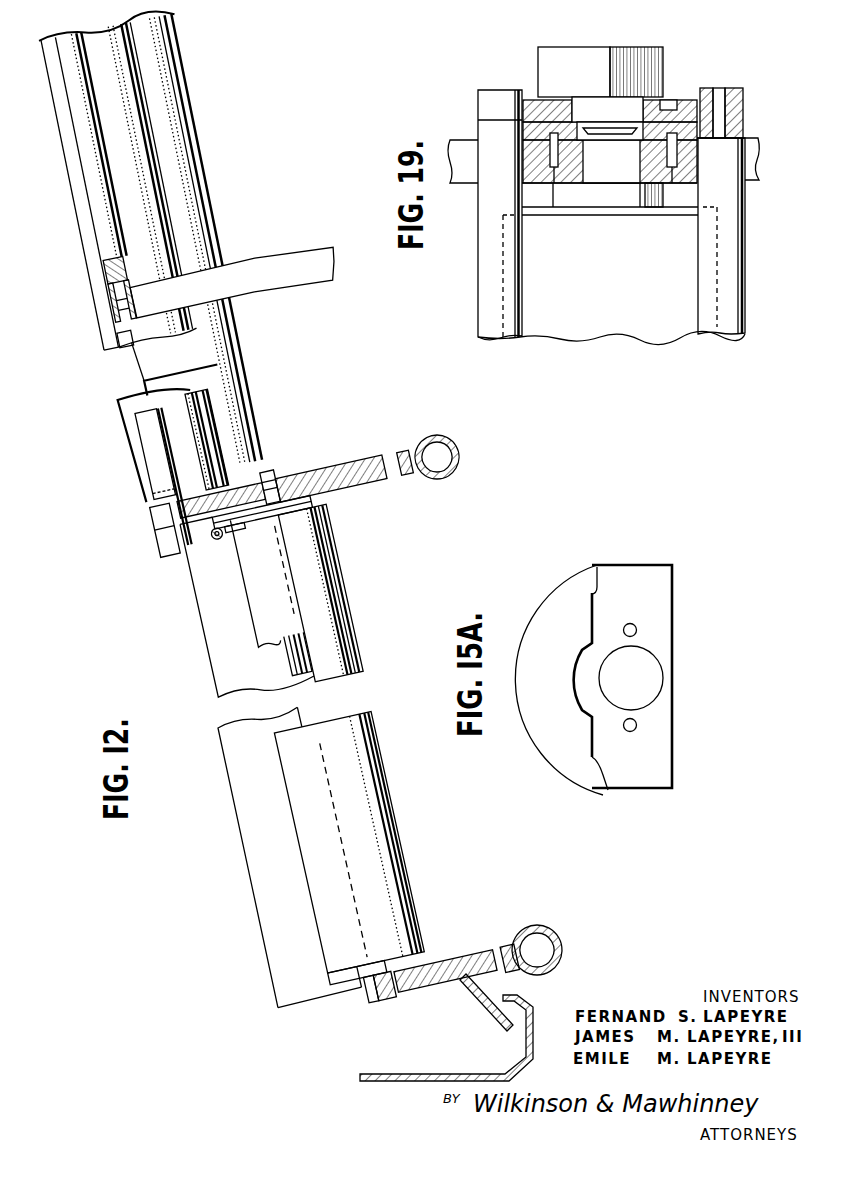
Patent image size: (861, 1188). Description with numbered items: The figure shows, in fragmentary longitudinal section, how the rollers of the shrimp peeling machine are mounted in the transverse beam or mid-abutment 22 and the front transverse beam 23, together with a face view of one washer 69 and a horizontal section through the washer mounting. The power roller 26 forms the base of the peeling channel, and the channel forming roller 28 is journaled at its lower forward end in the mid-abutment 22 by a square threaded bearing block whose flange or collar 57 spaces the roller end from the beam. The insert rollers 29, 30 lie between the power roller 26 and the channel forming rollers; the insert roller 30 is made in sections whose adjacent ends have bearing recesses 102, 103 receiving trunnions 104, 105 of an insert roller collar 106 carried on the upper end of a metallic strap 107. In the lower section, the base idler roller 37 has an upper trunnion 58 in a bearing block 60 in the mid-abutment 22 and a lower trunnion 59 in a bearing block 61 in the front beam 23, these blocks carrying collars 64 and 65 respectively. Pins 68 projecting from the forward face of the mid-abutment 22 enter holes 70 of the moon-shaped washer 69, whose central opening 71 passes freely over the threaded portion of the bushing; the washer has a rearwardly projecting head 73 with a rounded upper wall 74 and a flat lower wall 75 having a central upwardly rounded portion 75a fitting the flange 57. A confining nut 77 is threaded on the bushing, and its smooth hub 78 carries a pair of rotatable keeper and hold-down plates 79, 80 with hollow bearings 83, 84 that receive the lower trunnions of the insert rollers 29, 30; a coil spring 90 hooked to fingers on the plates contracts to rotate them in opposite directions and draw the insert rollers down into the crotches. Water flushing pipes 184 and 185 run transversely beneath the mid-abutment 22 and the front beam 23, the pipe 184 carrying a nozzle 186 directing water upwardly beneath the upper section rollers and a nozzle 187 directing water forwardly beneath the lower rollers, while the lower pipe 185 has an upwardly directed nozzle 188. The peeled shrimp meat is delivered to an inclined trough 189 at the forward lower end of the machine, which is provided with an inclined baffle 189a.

In FIG. 19, the transverse beam or mid-abutment 22 is at (448, 162).
In FIG. 12, the transverse beam or mid-abutment 22 is at (360, 462).
In FIG. 12, the transverse beam 23 is at (480, 958).
In FIG. 12, the power roller 26 is at (187, 177).
In FIG. 19, the channel forming roller 28 is at (568, 341).
In FIG. 12, the channel forming roller 28 is at (115, 100).
In FIG. 19, the insert roller 29 is at (730, 238).
In FIG. 19, the insert roller 30 is at (478, 296).
In FIG. 12, the insert roller 30 is at (105, 235).
In FIG. 12, the base idler roller 37 is at (378, 783).
In FIG. 19, the flange or collar 57 is at (566, 200).
In FIG. 12, the flange or collar 57 is at (182, 475).
In FIG. 12, the upper trunnion 58 is at (270, 480).
In FIG. 12, the lower trunnion 59 is at (385, 1000).
In FIG. 12, the bearing block 60 is at (282, 485).
In FIG. 12, the bearing block 61 is at (365, 1000).
In FIG. 12, the flange or collar 64 is at (330, 500).
In FIG. 12, the flange or collar 65 is at (355, 975).
In FIG. 19, the pin 68 is at (660, 160).
In FIG. 19, the moon-shaped washer 69 is at (524, 140).
In FIG. 15A, the moon-shaped washer 69 is at (652, 565).
In FIG. 12, the moon-shaped washer 69 is at (185, 522).
In FIG. 19, the hole 70 is at (555, 128).
In FIG. 15A, the hole 70 is at (637, 633).
In FIG. 19, the central opening 71 is at (595, 125).
In FIG. 15A, the central opening 71 is at (618, 700).
In FIG. 15A, the head or flange 73 is at (547, 673).
In FIG. 15A, the rounded upper wall 74 is at (525, 720).
In FIG. 15A, the flat lower horizontal wall 75 is at (597, 578).
In FIG. 15A, the central upwardly rounded portion 75a is at (577, 664).
In FIG. 19, the confining nut 77 is at (560, 100).
In FIG. 19, the internally threaded hub or shank 78 is at (620, 90).
In FIG. 19, the keeper and hold-down plate 79 is at (685, 102).
In FIG. 12, the keeper and hold-down plate 79 is at (240, 538).
In FIG. 19, the keeper and hold-down plate 80 is at (668, 100).
In FIG. 12, the keeper and hold-down plate 80 is at (212, 540).
In FIG. 19, the hollow bearing 83 is at (480, 131).
In FIG. 19, the hollow bearing 84 is at (730, 87).
In FIG. 12, the hollow bearing 84 is at (155, 555).
In FIG. 12, the coil spring 90 is at (228, 550).
In FIG. 12, the bearing recess 102 is at (115, 336).
In FIG. 12, the bearing recess 103 is at (105, 285).
In FIG. 12, the trunnion 104 is at (130, 360).
In FIG. 12, the trunnion 105 is at (122, 282).
In FIG. 12, the insert roller collar 106 is at (110, 308).
In FIG. 12, the metallic strap or bearing support 107 is at (302, 262).
In FIG. 12, the water flushing pipe 184 is at (458, 458).
In FIG. 12, the lower water pipe 185 is at (563, 950).
In FIG. 12, the nozzle 186 is at (413, 442).
In FIG. 12, the nozzle 187 is at (428, 478).
In FIG. 12, the nozzle 188 is at (518, 942).
In FIG. 12, the trough 189 is at (525, 995).
In FIG. 12, the inclined baffle 189a is at (485, 1000).